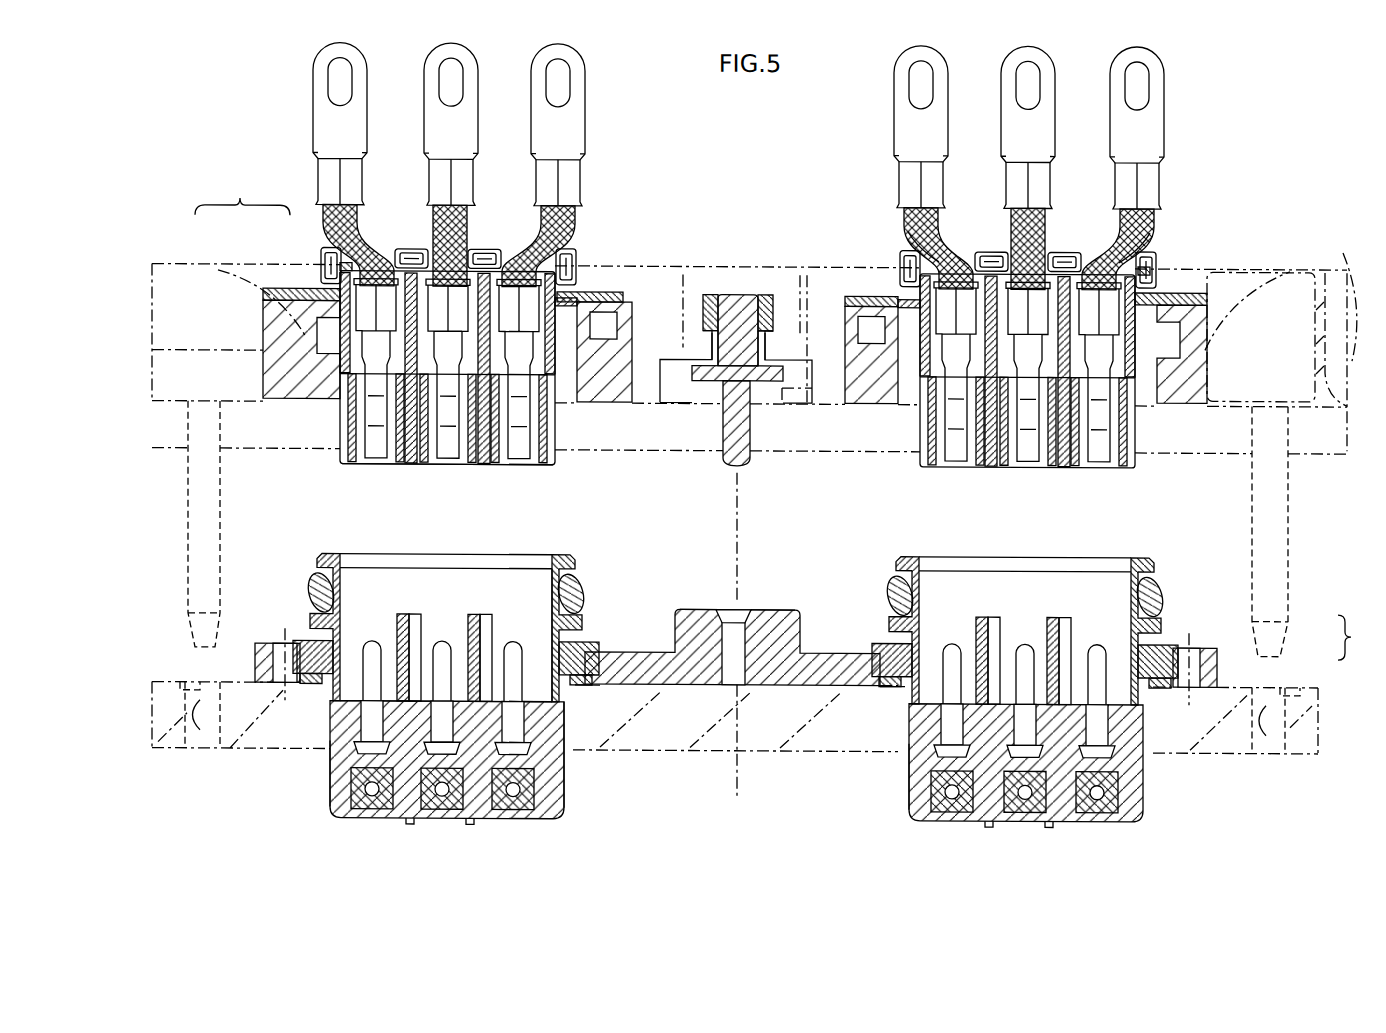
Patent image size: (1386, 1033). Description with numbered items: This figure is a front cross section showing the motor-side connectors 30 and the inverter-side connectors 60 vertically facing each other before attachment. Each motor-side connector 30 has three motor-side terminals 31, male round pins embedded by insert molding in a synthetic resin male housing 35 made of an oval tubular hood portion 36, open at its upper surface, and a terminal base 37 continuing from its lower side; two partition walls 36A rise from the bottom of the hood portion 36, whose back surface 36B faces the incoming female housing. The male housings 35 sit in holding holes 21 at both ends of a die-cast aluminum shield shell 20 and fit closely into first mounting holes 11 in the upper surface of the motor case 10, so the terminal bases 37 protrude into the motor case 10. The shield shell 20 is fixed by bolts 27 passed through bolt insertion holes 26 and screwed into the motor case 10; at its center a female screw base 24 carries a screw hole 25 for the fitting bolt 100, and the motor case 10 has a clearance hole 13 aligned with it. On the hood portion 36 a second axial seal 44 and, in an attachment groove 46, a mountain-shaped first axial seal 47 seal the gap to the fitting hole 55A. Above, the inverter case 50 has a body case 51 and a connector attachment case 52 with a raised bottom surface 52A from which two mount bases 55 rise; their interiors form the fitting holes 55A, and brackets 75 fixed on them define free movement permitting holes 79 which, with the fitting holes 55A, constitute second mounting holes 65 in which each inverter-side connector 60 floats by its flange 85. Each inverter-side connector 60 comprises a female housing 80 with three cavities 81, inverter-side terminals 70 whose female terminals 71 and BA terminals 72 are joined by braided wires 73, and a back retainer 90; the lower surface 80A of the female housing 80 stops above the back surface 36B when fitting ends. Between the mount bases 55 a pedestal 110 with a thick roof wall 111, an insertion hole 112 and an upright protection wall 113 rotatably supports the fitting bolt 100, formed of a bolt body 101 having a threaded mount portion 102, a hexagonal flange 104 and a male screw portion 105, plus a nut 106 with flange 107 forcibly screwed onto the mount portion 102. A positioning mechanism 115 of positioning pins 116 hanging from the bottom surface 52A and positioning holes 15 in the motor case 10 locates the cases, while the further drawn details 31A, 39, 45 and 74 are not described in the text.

The motor case 10 is at (1216, 752).
The first mounting hole 11 is at (333, 790).
The clearance hole 13 is at (737, 757).
The positioning hole 15 is at (202, 690).
The shield shell 20 is at (732, 614).
The holding hole 21 is at (583, 688).
The female screw base 24 is at (775, 607).
The screw hole 25 is at (730, 624).
The bolt insertion hole 26 is at (1190, 645).
The bolt 27 is at (280, 642).
The motor-side connector 30 is at (716, 692).
The motor-side terminal 31 is at (372, 655).
The male terminal 31A is at (952, 655).
The male housing 35 is at (335, 735).
The hood portion 36 is at (558, 585).
The partition wall 36A is at (410, 622).
The back surface 36B is at (333, 702).
The terminal base 37 is at (566, 790).
The terminal fitting 39 is at (515, 810).
The second axial seal 44 is at (585, 640).
The seal 45 is at (590, 685).
The attachment groove 46 is at (1163, 582).
The first axial seal 47 is at (315, 580).
The inverter case 50 is at (1335, 260).
The body case 51 is at (1288, 440).
The connector attachment case 52 is at (1347, 448).
The bottom surface 52A is at (1225, 404).
The mount base 55 is at (258, 352).
The fitting hole 55A is at (228, 298).
The inverter-side connector 60 is at (748, 293).
The second mounting hole 65 is at (242, 194).
The inverter-side terminal 70 is at (330, 190).
The female terminal 71 is at (1090, 420).
The BA terminal 72 is at (314, 110).
The braided wire 73 is at (960, 262).
The shield member 74 is at (935, 230).
The bracket 75 is at (600, 290).
The free movement permitting hole 79 is at (343, 262).
The female housing 80 is at (345, 430).
The lower surface 80A is at (538, 458).
The cavity 81 is at (1120, 416).
The flange 85 is at (600, 296).
The back retainer 90 is at (572, 258).
The fitting bolt 100 is at (706, 339).
The bolt body 101 is at (742, 338).
The mount portion 102 is at (737, 290).
The hexagonal flange 104 is at (700, 376).
The male screw portion 105 is at (735, 461).
The nut 106 is at (712, 292).
The flange 107 is at (706, 324).
The pedestal 110 is at (830, 392).
The roof wall 111 is at (793, 388).
The insertion hole 112 is at (714, 345).
The protection wall 113 is at (800, 290).
The positioning mechanism 115 is at (1362, 637).
The positioning pin 116 is at (186, 555).